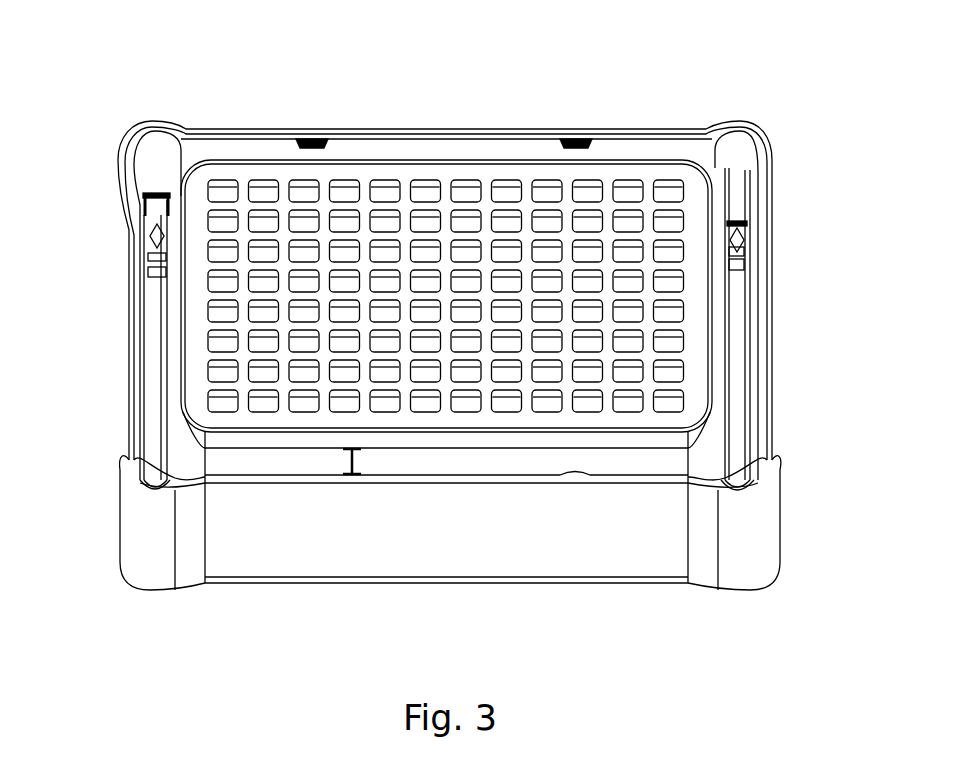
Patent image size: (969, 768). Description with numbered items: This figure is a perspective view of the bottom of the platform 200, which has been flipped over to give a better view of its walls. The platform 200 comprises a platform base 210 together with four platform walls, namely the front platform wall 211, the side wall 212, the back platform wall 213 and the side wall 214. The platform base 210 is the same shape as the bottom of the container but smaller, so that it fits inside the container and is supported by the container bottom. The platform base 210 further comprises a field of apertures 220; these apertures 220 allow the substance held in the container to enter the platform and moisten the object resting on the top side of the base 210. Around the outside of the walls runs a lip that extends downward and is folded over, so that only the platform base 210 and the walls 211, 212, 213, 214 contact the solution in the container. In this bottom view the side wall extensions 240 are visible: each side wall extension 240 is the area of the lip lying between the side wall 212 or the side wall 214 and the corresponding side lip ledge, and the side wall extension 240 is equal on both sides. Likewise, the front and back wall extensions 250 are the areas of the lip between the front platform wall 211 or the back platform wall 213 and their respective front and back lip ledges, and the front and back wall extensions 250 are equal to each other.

The platform 200 is at (246, 45).
The platform base 210 is at (647, 184).
The front platform wall 211 is at (410, 470).
The side wall 212 is at (120, 332).
The back platform wall 213 is at (374, 115).
The side wall 214 is at (767, 337).
The apertures 220 is at (450, 197).
The side wall extension 240 is at (135, 191).
The front and back wall extension 250 is at (328, 466).